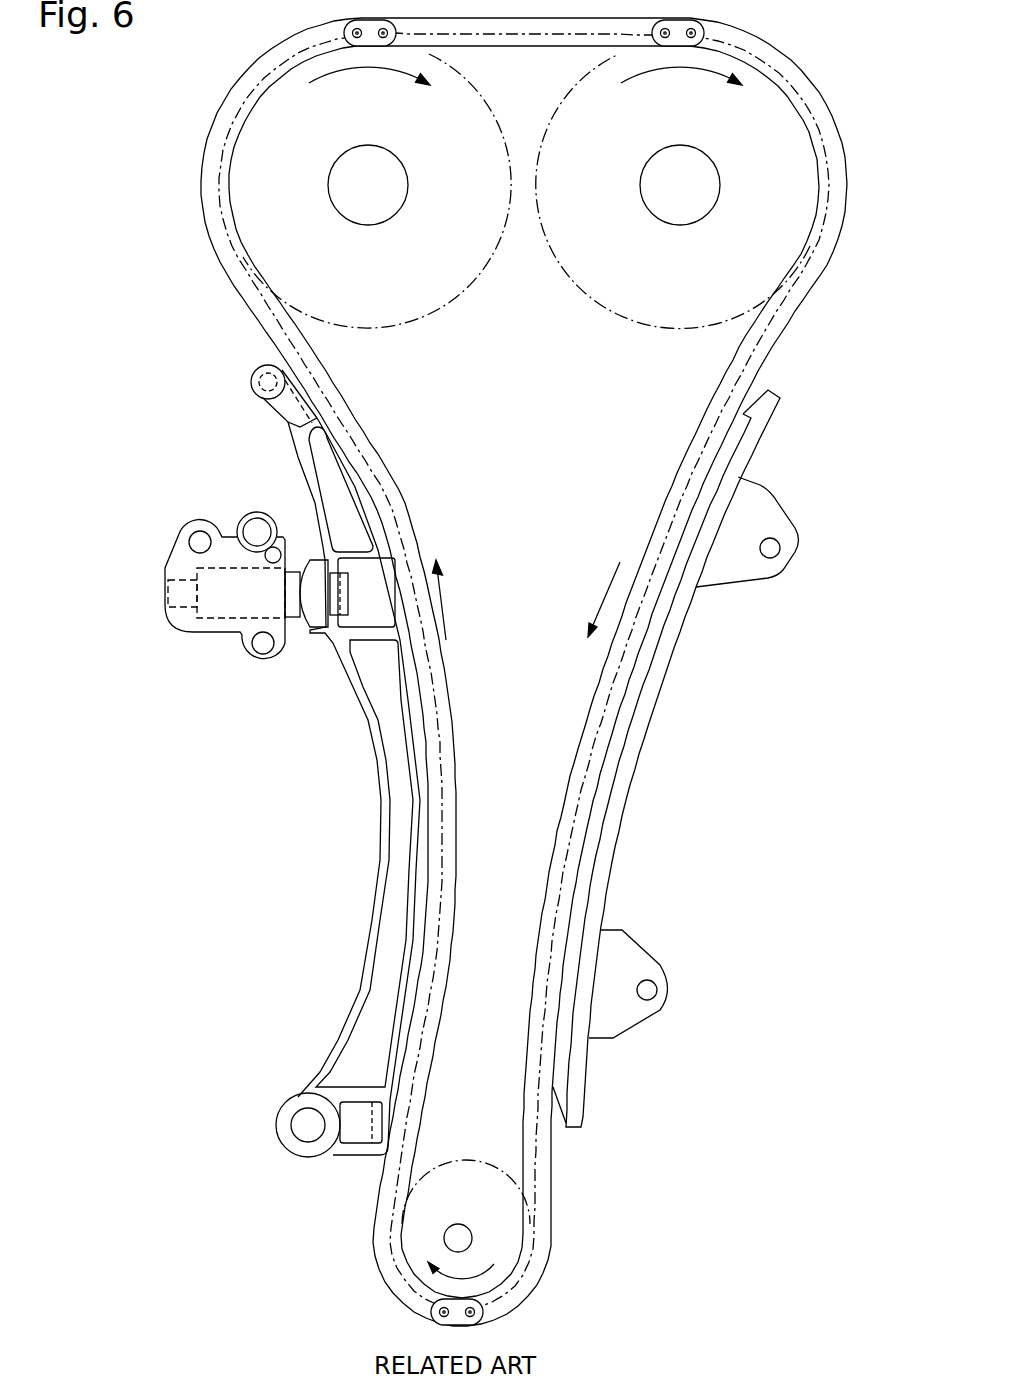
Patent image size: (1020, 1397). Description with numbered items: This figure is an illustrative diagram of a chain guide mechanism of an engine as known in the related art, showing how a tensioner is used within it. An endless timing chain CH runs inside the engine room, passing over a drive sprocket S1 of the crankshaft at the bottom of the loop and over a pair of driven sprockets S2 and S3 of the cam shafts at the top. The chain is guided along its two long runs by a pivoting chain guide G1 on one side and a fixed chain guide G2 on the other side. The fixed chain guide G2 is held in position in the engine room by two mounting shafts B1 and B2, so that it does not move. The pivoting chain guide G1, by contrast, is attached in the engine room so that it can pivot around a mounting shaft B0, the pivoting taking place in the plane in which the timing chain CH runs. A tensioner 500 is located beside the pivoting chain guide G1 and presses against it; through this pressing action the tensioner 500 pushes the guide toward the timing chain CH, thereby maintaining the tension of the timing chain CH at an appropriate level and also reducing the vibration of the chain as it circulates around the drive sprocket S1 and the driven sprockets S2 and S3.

The timing chain CH is at (765, 338).
The drive sprocket S1 is at (497, 1237).
The driven sprocket S2 is at (270, 179).
The driven sprocket S3 is at (757, 165).
The pivoting chain guide G1 is at (383, 992).
The fixed chain guide G2 is at (610, 815).
The mounting shaft B0 is at (298, 1126).
The mounting shaft B1 is at (780, 548).
The mounting shaft B2 is at (657, 990).
The tensioner 500 is at (182, 560).